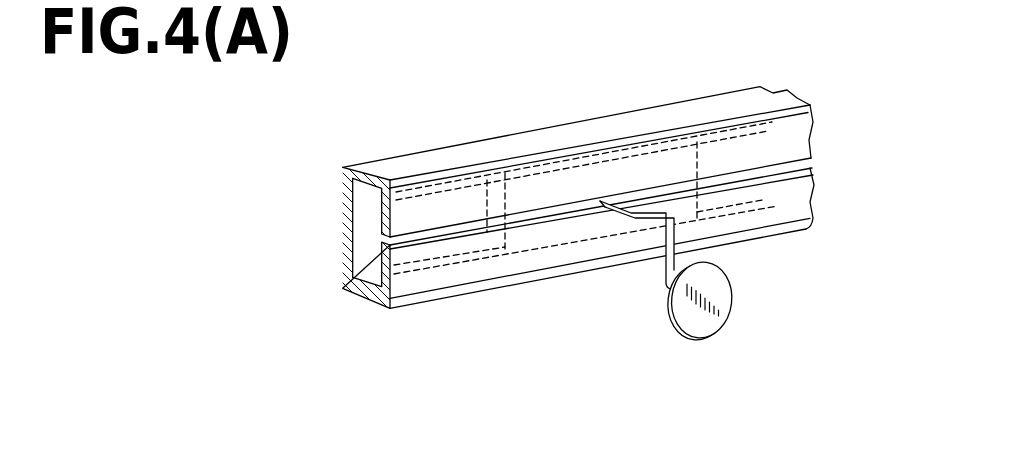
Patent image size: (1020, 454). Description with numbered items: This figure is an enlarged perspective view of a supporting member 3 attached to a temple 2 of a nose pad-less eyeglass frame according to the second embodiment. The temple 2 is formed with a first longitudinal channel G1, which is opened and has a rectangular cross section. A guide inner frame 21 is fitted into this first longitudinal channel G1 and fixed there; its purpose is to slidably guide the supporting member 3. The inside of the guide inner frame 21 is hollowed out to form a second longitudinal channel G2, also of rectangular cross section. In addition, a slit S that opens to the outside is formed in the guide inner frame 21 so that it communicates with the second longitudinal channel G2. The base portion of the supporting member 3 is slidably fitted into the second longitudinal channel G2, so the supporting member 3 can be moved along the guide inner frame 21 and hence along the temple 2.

The temple 2 is at (621, 113).
The guide inner frame 21 is at (367, 257).
The first longitudinal channel G1 is at (362, 192).
The second longitudinal channel G2 is at (357, 230).
The slit S is at (458, 222).
The supporting member 3 is at (750, 303).